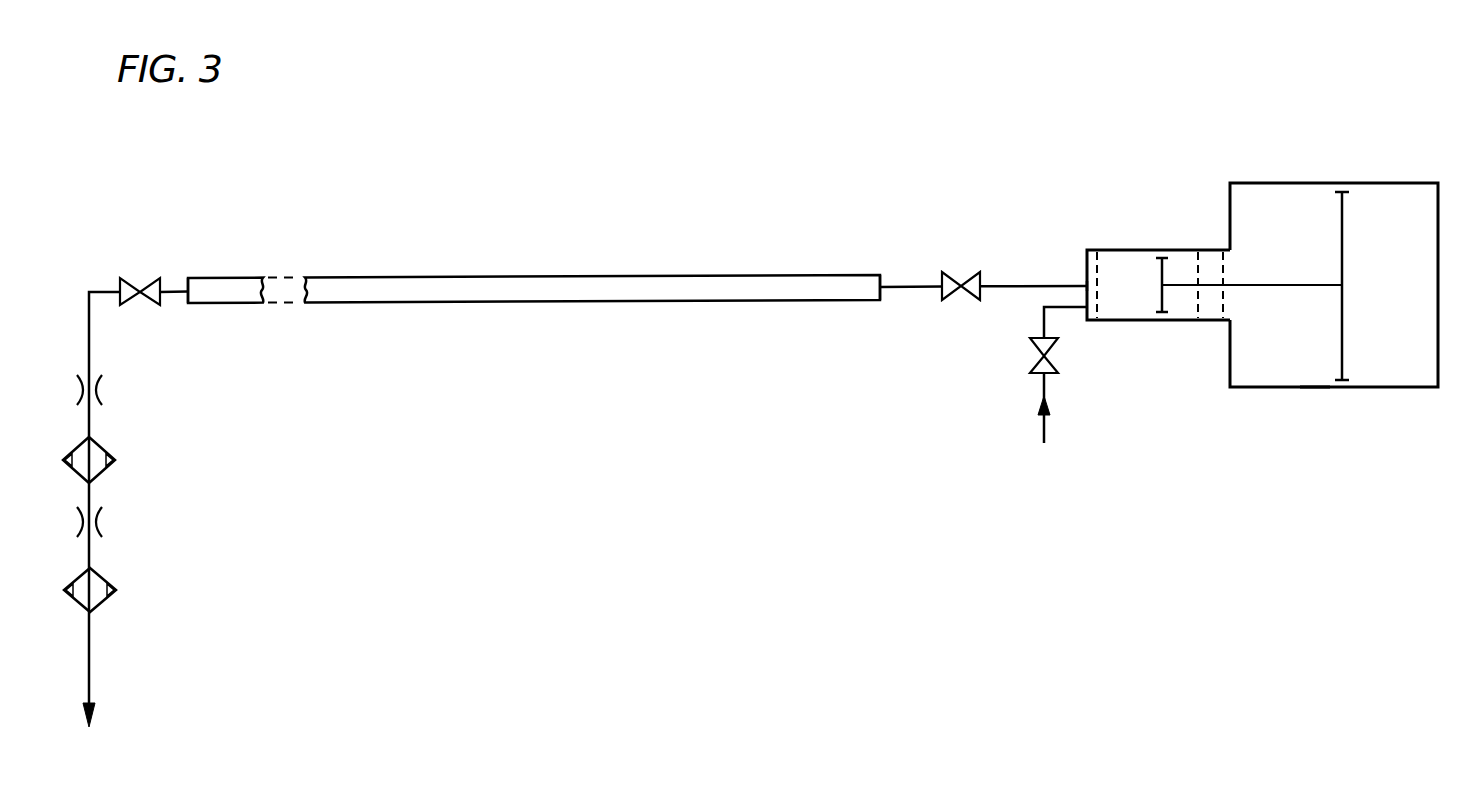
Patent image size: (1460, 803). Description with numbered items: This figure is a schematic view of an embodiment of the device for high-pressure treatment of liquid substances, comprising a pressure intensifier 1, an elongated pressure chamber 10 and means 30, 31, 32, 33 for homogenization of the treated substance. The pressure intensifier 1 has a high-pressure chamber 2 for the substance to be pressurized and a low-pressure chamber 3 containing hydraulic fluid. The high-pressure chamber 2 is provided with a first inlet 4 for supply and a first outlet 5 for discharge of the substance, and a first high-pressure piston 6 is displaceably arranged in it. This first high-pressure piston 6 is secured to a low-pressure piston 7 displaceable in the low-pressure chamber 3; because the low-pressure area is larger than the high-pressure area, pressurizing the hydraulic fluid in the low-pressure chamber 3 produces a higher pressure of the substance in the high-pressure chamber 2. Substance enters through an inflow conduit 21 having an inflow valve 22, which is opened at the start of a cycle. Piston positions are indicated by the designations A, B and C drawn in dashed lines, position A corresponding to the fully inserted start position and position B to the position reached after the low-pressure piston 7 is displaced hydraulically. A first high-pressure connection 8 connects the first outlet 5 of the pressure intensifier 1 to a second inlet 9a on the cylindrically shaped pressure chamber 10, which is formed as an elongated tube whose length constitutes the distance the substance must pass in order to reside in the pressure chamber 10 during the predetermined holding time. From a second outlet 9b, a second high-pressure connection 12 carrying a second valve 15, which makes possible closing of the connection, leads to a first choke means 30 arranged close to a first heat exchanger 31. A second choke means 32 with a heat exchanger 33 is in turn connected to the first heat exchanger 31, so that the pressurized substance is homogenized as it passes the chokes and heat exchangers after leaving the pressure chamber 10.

The pressure intensifier 1 is at (1265, 182).
The high-pressure chamber 2 is at (1128, 305).
The low-pressure chamber 3 is at (1289, 372).
The first inlet 4 is at (1087, 300).
The first outlet 5 is at (1087, 286).
The first high-pressure piston 6 is at (1158, 302).
The low-pressure piston 7 is at (1344, 357).
The first high-pressure connection 8 is at (1030, 285).
The second inlet 9a is at (882, 284).
The second outlet 9b is at (187, 290).
The pressure chamber 10 is at (520, 277).
The second high-pressure connection 12 is at (95, 345).
The second valve 15 is at (140, 290).
The inflow conduit 21 is at (1043, 428).
The inflow valve 22 is at (1030, 354).
The first choke means 30 is at (105, 388).
The first heat exchanger 31 is at (105, 446).
The second choke means 32 is at (105, 520).
The heat exchanger 33 is at (108, 583).
The position A is at (1098, 269).
The position B is at (1216, 269).
The position C is at (1195, 269).